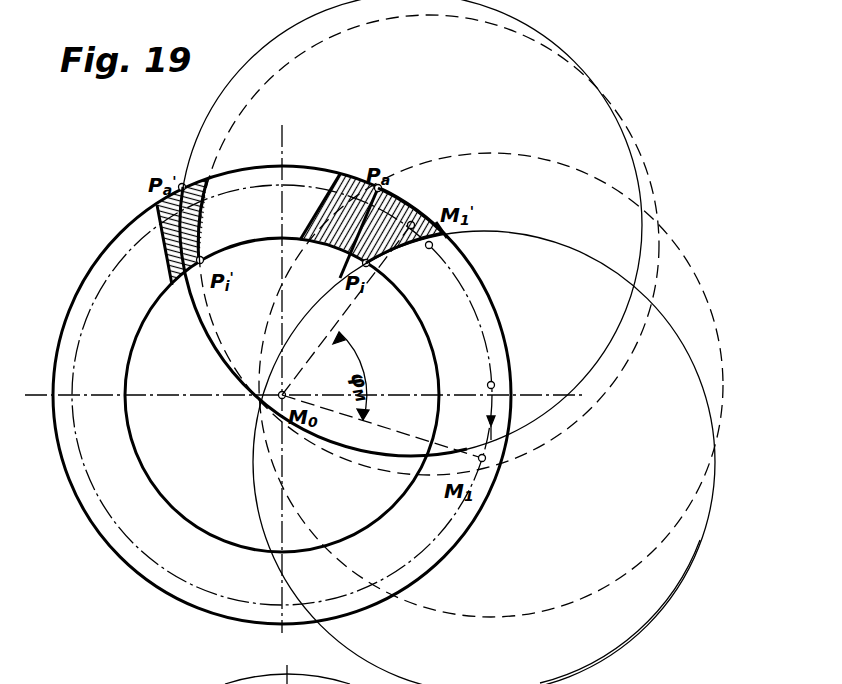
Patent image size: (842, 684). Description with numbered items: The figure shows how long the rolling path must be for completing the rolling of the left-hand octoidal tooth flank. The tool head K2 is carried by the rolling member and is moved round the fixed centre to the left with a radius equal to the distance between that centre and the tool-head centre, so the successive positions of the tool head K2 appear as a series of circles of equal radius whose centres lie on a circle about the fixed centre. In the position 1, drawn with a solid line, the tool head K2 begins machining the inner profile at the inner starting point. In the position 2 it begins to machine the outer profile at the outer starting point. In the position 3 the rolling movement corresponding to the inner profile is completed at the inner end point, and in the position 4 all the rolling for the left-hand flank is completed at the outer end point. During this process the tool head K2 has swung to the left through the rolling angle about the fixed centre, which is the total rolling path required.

The position 1 is at (712, 423).
The position 2 is at (720, 335).
The position 3 is at (637, 137).
The position 4 is at (528, 25).
The tool head K2 is at (623, 647).